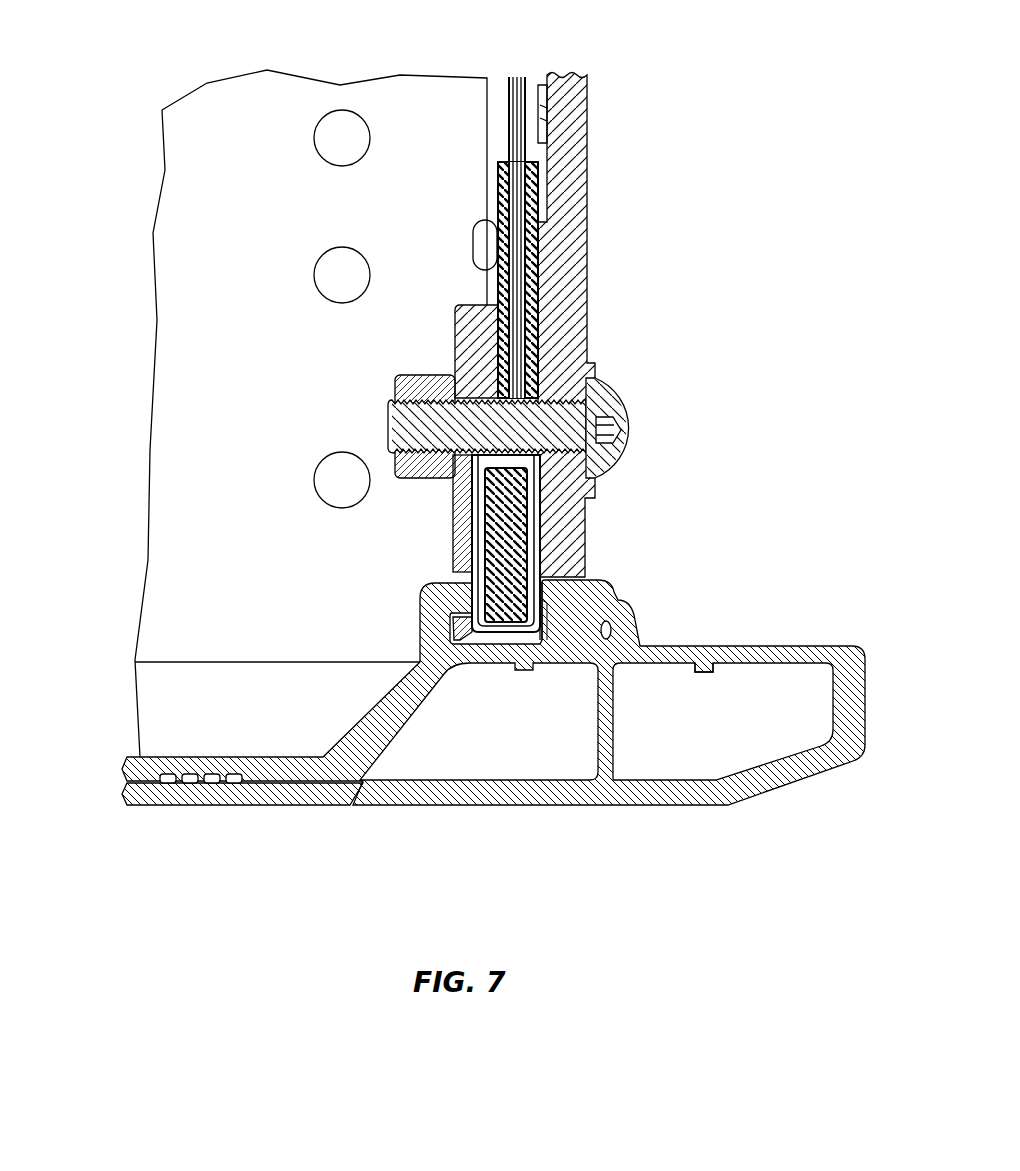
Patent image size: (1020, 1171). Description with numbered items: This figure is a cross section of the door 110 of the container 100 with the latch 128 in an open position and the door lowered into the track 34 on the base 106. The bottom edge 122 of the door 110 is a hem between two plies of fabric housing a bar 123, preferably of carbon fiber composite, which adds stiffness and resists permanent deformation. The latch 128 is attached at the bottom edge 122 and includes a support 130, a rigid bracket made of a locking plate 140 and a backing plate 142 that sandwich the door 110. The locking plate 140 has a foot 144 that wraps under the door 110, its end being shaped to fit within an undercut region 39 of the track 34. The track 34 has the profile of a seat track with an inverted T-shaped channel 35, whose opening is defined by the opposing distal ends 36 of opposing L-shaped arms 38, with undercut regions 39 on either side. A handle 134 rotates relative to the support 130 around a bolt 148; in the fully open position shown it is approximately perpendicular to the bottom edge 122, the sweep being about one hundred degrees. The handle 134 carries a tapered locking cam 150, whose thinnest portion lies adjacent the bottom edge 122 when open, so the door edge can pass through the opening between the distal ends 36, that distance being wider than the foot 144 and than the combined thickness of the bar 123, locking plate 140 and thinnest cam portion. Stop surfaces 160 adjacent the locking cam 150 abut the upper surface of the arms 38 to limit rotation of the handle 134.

The container 100 is at (223, 213).
The base 106 is at (753, 793).
The door 110 is at (527, 97).
The bottom edge 122 is at (499, 600).
The bar 123 is at (478, 543).
The latch 128 is at (645, 243).
The support 130 is at (467, 292).
The handle 134 is at (568, 318).
The locking plate 140 is at (533, 180).
The backing plate 142 is at (455, 340).
The foot 144 is at (472, 600).
The bolt 148 is at (620, 465).
The locking cam 150 is at (541, 600).
The stop surface 160 is at (559, 610).
The track 34 is at (637, 602).
The T-shaped channel 35 is at (550, 585).
The distal end 36 is at (483, 591).
The L-shaped arm 38 is at (455, 610).
The undercut region 39 is at (627, 676).